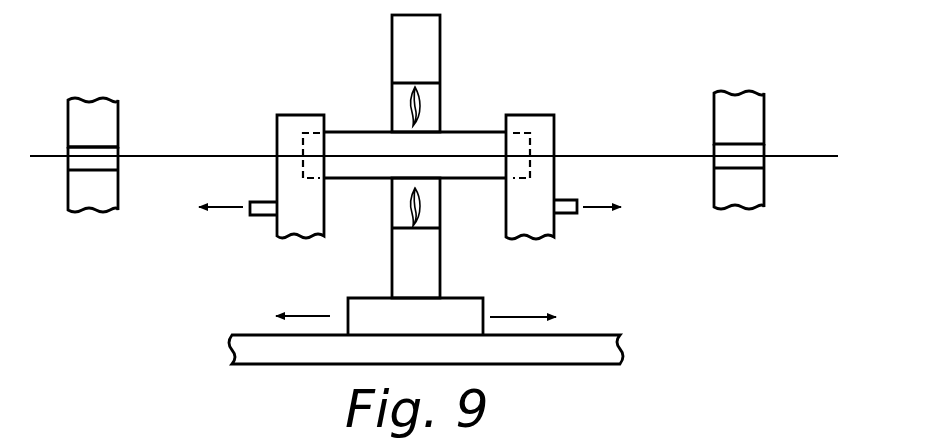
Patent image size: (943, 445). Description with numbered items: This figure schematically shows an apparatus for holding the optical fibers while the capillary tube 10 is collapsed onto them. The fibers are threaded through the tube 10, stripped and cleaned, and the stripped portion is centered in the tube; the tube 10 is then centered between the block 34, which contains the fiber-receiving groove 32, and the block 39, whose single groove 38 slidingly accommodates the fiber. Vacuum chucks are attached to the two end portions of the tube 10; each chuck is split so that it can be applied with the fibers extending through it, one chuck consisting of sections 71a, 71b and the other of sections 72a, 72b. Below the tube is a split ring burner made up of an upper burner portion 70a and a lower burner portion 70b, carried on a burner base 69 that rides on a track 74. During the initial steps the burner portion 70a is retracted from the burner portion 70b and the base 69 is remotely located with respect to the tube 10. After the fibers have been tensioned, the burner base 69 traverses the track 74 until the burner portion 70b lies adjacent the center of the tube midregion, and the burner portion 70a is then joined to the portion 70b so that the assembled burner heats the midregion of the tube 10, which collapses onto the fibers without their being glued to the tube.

The tube 10 is at (467, 131).
The groove 32 is at (742, 142).
The block 34 is at (738, 104).
The groove 38 is at (96, 145).
The block 39 is at (108, 190).
The burner base 69 is at (364, 297).
The burner portion 70a is at (442, 43).
The burner portion 70b is at (441, 268).
The vacuum chuck section 71a is at (300, 114).
The vacuum chuck section 71b is at (277, 177).
The vacuum chuck section 72a is at (528, 114).
The vacuum chuck section 72b is at (554, 177).
The track 74 is at (595, 334).